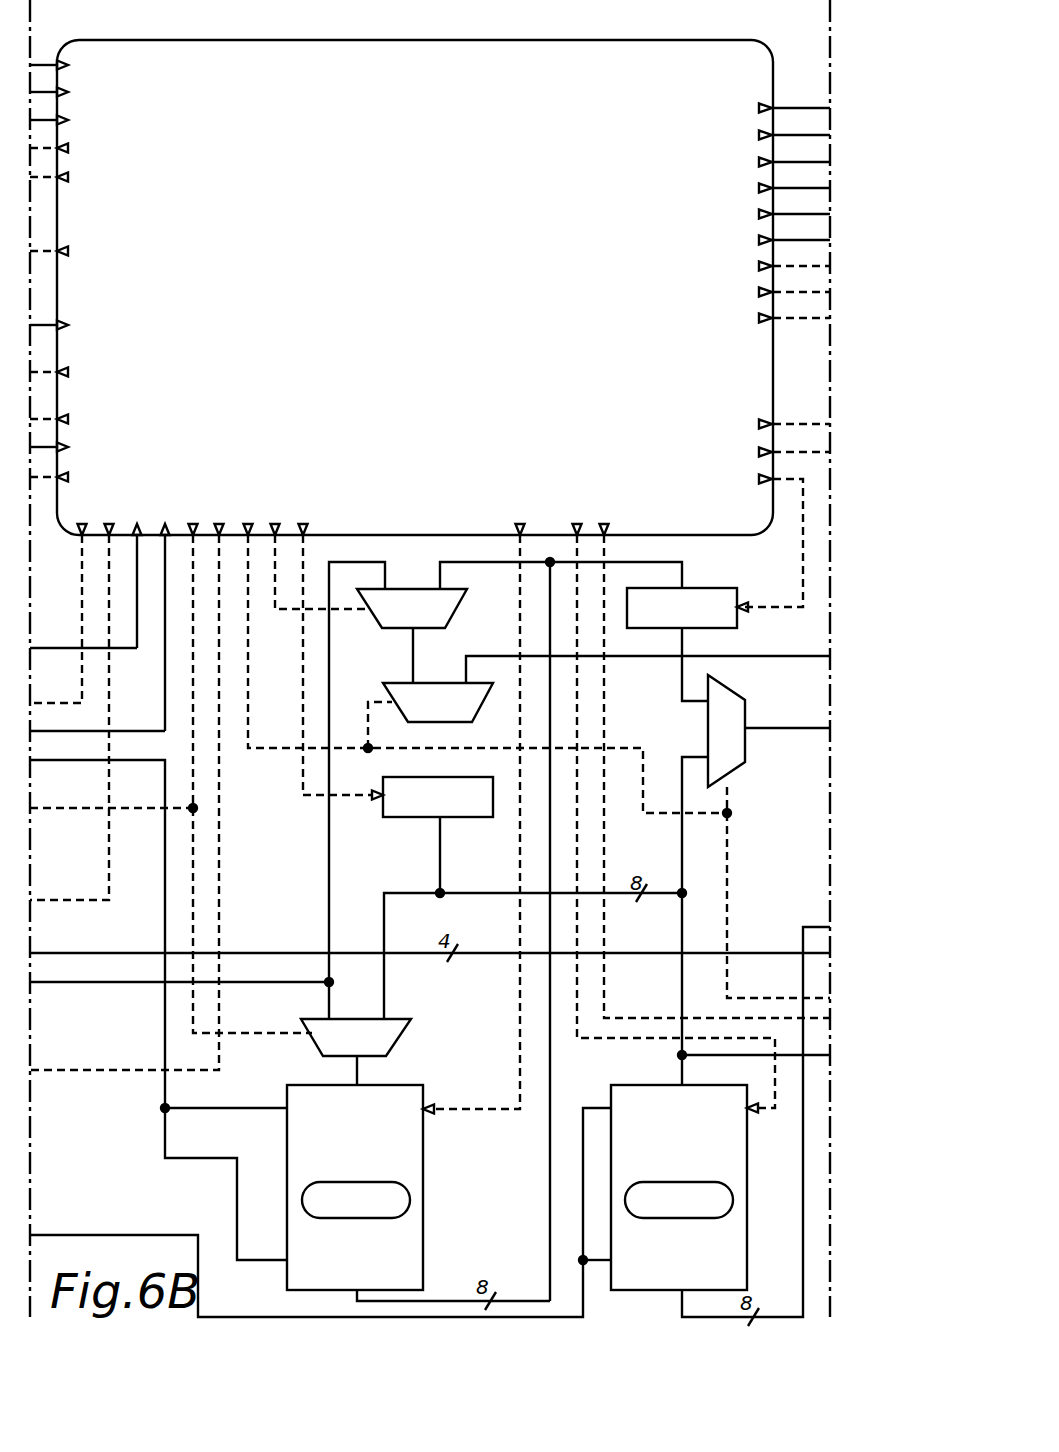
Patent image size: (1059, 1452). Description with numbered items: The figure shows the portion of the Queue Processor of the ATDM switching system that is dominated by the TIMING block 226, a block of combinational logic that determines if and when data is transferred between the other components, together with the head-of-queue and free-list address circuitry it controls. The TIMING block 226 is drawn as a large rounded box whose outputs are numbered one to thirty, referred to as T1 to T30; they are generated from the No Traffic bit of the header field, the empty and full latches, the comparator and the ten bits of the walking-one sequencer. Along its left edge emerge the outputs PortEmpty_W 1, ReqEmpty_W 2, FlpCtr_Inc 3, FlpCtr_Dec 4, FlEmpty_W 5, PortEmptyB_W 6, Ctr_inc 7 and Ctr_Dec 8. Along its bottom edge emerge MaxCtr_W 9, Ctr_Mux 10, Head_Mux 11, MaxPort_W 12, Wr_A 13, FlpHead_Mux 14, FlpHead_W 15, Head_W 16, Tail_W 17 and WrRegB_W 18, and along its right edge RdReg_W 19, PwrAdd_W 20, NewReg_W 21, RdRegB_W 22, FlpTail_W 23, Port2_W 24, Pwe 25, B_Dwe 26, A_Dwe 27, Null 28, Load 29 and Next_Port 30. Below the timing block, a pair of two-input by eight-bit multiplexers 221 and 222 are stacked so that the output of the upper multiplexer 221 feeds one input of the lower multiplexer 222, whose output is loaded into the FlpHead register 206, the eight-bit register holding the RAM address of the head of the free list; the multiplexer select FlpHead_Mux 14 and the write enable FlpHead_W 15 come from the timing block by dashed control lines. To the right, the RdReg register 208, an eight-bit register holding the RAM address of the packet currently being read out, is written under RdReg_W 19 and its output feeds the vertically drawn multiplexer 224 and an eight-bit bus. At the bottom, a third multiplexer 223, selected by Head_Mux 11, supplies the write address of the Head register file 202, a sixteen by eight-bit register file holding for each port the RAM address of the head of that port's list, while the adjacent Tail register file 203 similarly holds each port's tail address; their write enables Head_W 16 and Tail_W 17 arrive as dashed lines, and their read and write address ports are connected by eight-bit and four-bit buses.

The block of combinational logic 226 is at (415, 274).
The RdReg register 208 is at (687, 594).
The FlpHead register 206 is at (437, 814).
The 2 input by 8 bit multiplexer 221 is at (412, 623).
The 2 input by 8 bit multiplexer 222 is at (430, 689).
The 2 input by 8 bit multiplexer 223 is at (370, 1023).
The 2 input by 8 bit multiplexer 224 is at (753, 731).
The Head register file 202 is at (355, 1173).
The Tail register file 203 is at (679, 1173).
The timing output PortEmpty_W 1 is at (60, 148).
The timing output ReqEmpty_W 2 is at (60, 177).
The timing output FlpCtr_Inc 3 is at (70, 252).
The timing output FlpCtr_Dec 4 is at (70, 252).
The timing output FlEmpty_W 5 is at (60, 372).
The timing output PortEmptyB_W 6 is at (60, 419).
The timing output Ctr_inc 7 is at (70, 478).
The timing output Ctr_Dec 8 is at (70, 478).
The timing output MaxCtr_W 9 is at (60, 601).
The timing output Ctr_Mux 10 is at (75, 700).
The timing output Head_Mux 11 is at (171, 766).
The timing output MaxPort_W 12 is at (130, 785).
The timing output Wr_A 13 is at (484, 658).
The timing output FlpHead_Mux 14 is at (316, 554).
The timing output FlpHead_W 15 is at (338, 650).
The timing output Head_W 16 is at (477, 807).
The timing output Tail_W 17 is at (670, 806).
The timing output WrRegB_W 18 is at (712, 759).
The timing output RdReg_W 19 is at (765, 539).
The timing output PwrAdd_W 20 is at (779, 452).
The timing output NewReg_W 21 is at (779, 424).
The timing output RdRegB_W 22 is at (779, 318).
The timing output FlpTail_W 23 is at (779, 292).
The timing output Port2_W 24 is at (779, 266).
The timing output Pwe 25 is at (779, 240).
The timing output B_Dwe 26 is at (779, 214).
The timing output A_Dwe 27 is at (779, 188).
The timing output Null 28 is at (779, 162).
The timing output Load 29 is at (779, 135).
The timing output Next_Port 30 is at (779, 108).